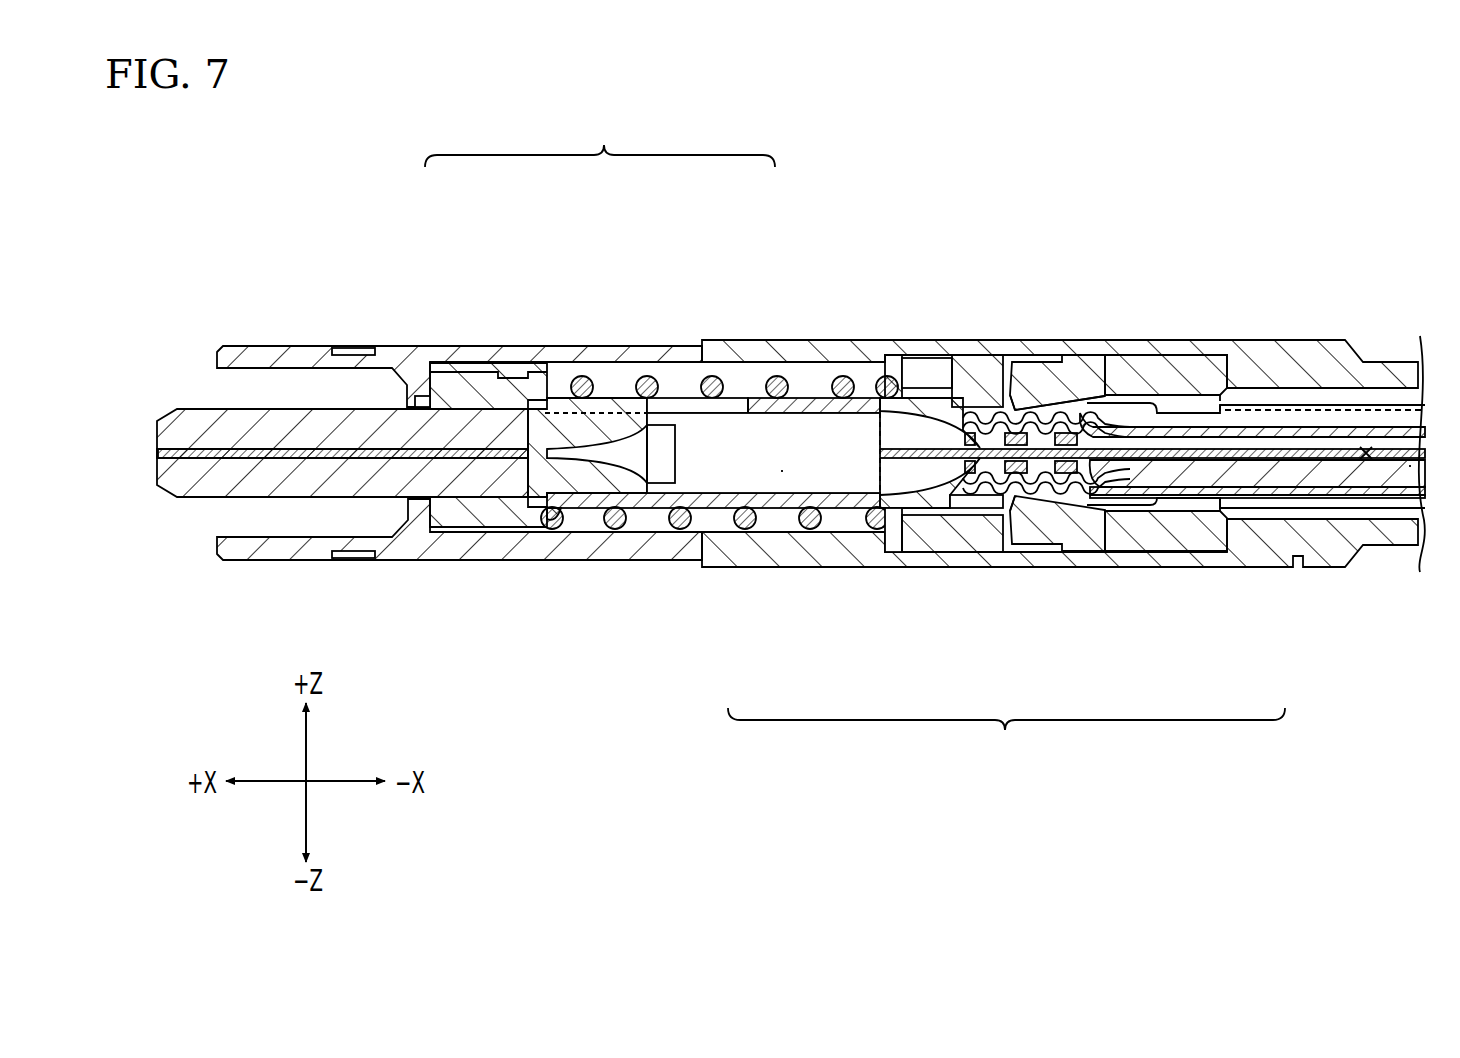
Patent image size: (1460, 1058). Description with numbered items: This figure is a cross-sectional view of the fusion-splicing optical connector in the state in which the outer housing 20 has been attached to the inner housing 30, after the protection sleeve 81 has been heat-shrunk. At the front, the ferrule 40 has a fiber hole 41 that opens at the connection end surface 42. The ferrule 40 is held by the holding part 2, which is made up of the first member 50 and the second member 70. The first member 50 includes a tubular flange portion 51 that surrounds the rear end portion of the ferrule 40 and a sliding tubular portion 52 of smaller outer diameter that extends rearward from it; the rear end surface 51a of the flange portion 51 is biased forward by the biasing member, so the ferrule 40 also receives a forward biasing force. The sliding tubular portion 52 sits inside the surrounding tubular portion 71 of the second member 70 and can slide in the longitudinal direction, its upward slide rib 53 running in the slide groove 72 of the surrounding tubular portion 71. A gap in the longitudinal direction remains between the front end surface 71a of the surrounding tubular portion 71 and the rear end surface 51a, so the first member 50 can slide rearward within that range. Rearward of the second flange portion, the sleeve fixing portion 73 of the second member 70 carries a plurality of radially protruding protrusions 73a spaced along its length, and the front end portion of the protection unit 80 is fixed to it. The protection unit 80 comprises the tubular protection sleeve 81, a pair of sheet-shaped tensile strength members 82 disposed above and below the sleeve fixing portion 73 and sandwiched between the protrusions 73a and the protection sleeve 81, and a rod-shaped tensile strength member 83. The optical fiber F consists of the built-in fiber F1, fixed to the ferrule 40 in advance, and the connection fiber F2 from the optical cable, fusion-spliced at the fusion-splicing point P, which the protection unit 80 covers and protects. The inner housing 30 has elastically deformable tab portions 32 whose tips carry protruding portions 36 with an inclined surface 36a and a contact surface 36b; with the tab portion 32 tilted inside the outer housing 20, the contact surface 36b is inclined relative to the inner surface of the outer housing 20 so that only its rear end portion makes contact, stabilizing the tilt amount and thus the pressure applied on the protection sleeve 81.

The holding part 2 is at (600, 140).
The outer housing 20 is at (245, 341).
The inner housing 30 is at (1333, 336).
The tab portion 32 is at (1150, 354).
The protruding portion 36 is at (1057, 389).
The inclined surface 36a is at (1003, 406).
The contact surface 36b is at (1030, 394).
The ferrule 40 is at (317, 443).
The fiber hole 41 is at (163, 451).
The connection end surface 42 is at (164, 481).
The first member 50 is at (531, 402).
The flange portion 51 is at (483, 378).
The rear end surface 51a is at (545, 376).
The sliding tubular portion 52 is at (603, 484).
The slide rib 53 is at (603, 403).
The second member 70 is at (751, 395).
The surrounding tubular portion 71 is at (751, 447).
The front end surface 71a is at (556, 518).
The slide groove 72 is at (683, 397).
The sleeve fixing portion 73 is at (1016, 390).
The protrusions 73a is at (985, 426).
The protection unit 80 is at (1252, 437).
The protection sleeve 81 is at (1258, 488).
The tensile strength members 82 is at (1268, 426).
The rod-shaped tensile strength member 83 is at (1297, 480).
The fusion-splicing point P is at (1366, 450).
The optical fiber F is at (1006, 739).
The built-in fiber F1 is at (782, 470).
The connection fiber F2 is at (1412, 468).